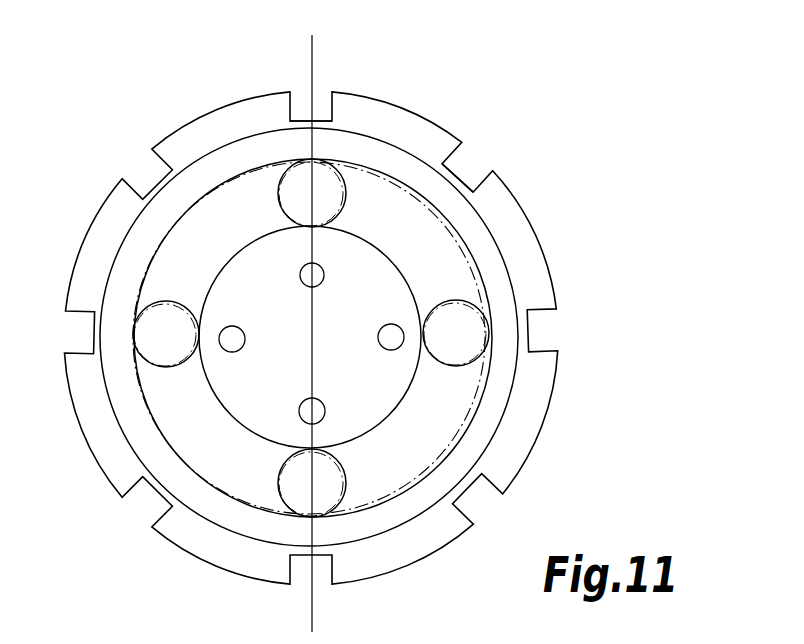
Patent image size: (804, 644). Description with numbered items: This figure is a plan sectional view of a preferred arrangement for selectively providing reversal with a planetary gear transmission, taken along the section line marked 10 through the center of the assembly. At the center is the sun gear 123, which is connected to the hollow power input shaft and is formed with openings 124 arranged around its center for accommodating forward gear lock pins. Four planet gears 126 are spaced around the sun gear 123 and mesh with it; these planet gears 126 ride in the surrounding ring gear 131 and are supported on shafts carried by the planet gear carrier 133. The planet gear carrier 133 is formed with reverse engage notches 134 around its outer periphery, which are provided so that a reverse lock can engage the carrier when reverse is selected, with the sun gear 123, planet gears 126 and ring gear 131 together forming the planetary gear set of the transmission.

The section line 10- 10 is at (288, 53).
The sun gear 123 is at (248, 393).
The openings 124 is at (317, 272).
The planet gears 126 is at (294, 194).
The ring gear 131 is at (402, 169).
The planet gear carrier 133 is at (440, 139).
The reverse engage notches 134 is at (320, 100).